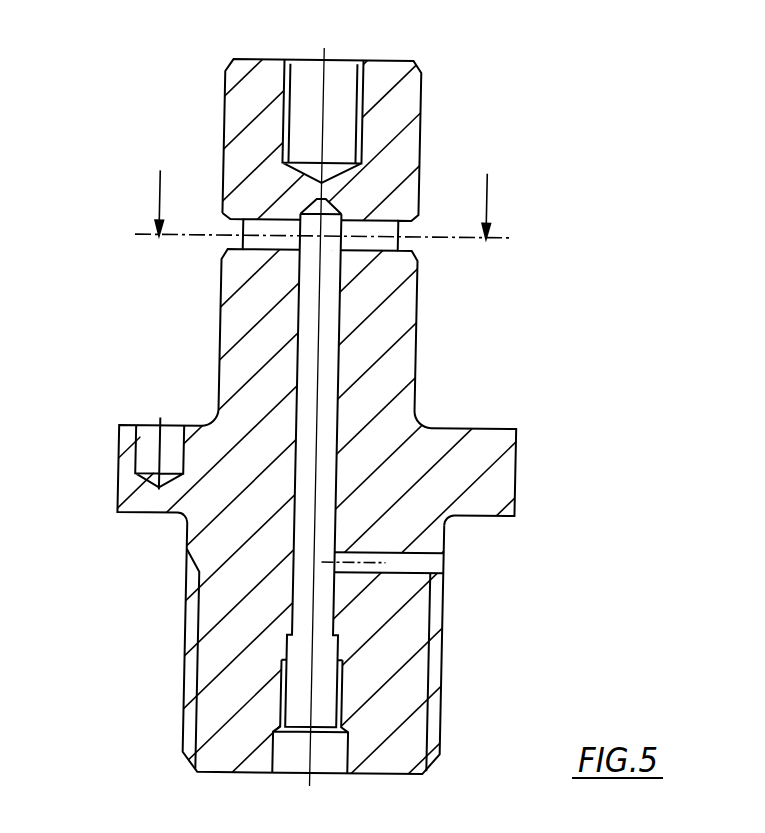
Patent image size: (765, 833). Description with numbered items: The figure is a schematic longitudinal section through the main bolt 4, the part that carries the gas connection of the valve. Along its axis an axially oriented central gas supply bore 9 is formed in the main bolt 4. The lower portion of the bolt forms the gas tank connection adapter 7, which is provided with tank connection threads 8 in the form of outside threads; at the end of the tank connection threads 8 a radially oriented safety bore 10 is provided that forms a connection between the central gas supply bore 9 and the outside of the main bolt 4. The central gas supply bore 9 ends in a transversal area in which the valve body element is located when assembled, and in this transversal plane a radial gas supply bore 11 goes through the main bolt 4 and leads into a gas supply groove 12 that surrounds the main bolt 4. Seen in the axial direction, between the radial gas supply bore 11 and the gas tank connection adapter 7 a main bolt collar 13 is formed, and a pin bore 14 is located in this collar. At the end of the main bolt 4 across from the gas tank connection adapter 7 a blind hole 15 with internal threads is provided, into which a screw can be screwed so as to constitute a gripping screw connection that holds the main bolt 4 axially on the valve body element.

The main bolt 4 is at (102, 77).
The gas tank connection adapter 7 is at (250, 653).
The tank connection threads 8 is at (435, 673).
The central gas supply bore 9 is at (327, 375).
The safety bore 10 is at (415, 563).
The radial gas supply bore 11 is at (240, 249).
The gas supply groove 12 is at (403, 245).
The main bolt collar 13 is at (497, 472).
The pin bore 14 is at (152, 443).
The blind hole 15 is at (340, 90).